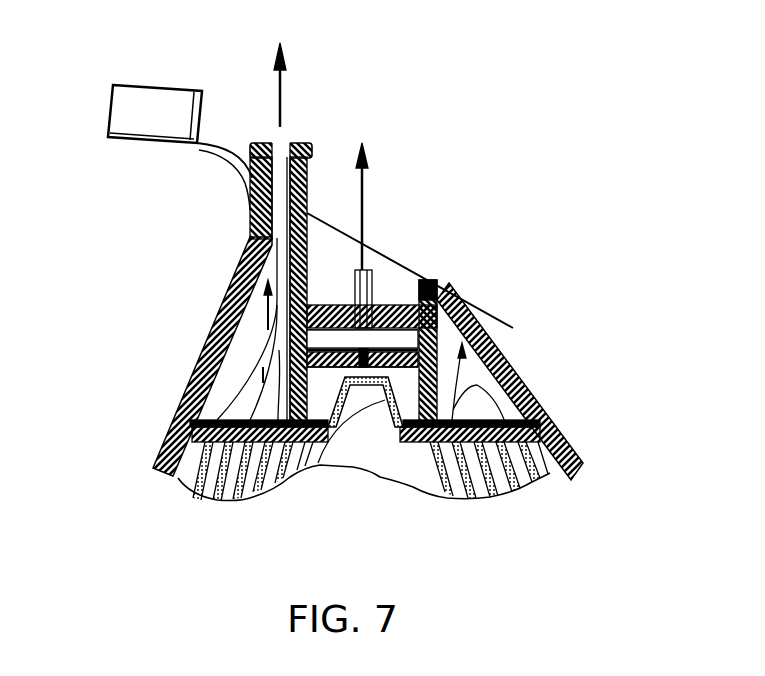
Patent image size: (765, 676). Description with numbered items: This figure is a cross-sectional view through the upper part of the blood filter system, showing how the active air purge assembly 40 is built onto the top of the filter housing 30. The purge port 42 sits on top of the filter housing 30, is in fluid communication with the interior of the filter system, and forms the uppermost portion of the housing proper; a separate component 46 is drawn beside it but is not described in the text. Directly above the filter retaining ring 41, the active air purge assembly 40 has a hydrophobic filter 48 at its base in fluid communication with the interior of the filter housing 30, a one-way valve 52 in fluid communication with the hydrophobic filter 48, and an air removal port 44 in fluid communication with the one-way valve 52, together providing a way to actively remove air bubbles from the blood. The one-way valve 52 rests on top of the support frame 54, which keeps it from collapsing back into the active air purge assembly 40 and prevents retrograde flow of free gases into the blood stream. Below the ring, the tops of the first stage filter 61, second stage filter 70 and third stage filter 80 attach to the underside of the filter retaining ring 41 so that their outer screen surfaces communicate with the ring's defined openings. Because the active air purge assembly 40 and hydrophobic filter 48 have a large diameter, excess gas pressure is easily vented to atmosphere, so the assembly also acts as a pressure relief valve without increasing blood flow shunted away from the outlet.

The filter housing 30 is at (193, 360).
The active air purge assembly 40 is at (437, 336).
The filter retaining ring 41 is at (175, 478).
The purge port 42 is at (268, 143).
The air removal port 44 is at (373, 272).
The connector 46 is at (158, 85).
The hydrophobic filter 48 is at (316, 467).
The one-way valve 52 is at (390, 328).
The support frame 54 is at (385, 400).
The first stage filter 61 is at (200, 492).
The second stage filter 70 is at (230, 504).
The third stage filter 80 is at (272, 483).